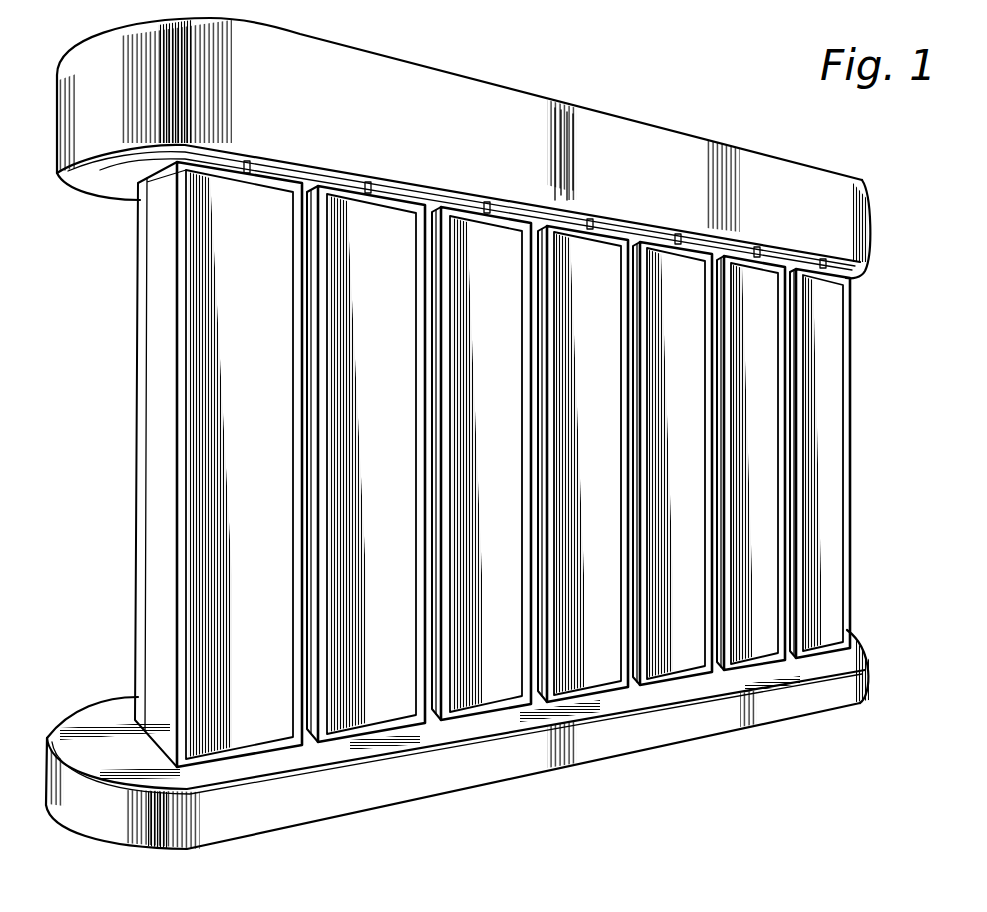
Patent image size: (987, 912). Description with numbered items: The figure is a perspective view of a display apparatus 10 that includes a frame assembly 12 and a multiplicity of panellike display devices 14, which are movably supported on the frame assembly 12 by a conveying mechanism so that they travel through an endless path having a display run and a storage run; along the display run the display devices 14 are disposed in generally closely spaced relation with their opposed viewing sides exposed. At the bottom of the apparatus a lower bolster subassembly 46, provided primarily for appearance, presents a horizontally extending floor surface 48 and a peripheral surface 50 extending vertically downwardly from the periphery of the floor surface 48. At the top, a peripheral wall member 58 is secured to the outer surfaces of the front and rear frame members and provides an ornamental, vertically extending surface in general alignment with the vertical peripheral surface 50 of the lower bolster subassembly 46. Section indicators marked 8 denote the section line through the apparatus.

The section line 8- 8 is at (398, 173).
The display apparatus 10 is at (923, 135).
The frame assembly 12 is at (905, 246).
The panellike display devices 14 is at (574, 226).
The lower bolster subassembly 46 is at (626, 738).
The floor surface 48 is at (296, 763).
The peripheral surface 50 is at (463, 768).
The peripheral wall member 58 is at (647, 95).